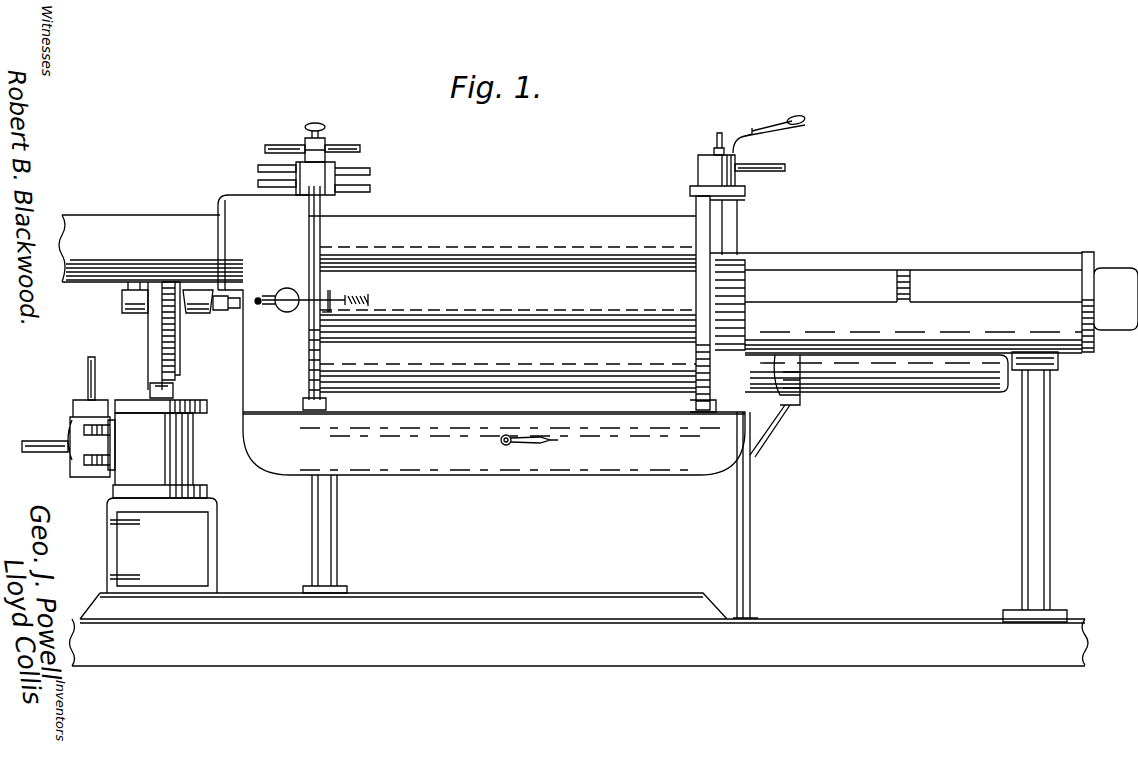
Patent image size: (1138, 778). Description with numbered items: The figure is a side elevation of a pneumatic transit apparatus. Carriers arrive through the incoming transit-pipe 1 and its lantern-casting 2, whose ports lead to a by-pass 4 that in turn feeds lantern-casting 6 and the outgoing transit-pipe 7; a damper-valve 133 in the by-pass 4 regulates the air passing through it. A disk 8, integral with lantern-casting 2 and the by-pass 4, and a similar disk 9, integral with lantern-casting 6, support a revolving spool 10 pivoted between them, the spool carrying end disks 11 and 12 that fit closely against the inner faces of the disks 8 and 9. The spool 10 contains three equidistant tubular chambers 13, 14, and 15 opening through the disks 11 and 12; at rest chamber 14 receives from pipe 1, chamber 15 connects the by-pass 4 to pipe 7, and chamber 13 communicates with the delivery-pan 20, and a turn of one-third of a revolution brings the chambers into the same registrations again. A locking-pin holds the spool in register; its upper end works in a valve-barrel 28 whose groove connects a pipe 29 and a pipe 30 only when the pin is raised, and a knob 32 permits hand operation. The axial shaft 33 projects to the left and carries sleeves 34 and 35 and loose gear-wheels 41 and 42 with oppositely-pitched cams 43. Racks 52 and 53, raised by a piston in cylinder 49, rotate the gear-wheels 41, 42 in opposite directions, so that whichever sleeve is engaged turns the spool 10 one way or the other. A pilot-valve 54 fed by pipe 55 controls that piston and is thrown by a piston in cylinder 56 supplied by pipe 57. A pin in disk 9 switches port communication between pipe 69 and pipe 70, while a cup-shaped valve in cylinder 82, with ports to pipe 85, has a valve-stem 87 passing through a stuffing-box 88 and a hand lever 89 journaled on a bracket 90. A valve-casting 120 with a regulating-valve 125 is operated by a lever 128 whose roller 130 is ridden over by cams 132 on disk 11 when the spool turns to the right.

The incoming transit-pipe 1 is at (143, 224).
The lantern-casting 2 is at (238, 198).
The by-pass 4 is at (494, 402).
The lantern-casting 6 is at (792, 405).
The outgoing transit-pipe 7 is at (903, 393).
The disk 8 is at (306, 241).
The disk 9 is at (738, 230).
The revolving spool 10 is at (502, 197).
The disk 11 is at (322, 222).
The disk 12 is at (696, 212).
The tubular chamber 13 is at (508, 311).
The tubular chamber 14 is at (508, 246).
The tubular chamber 15 is at (508, 370).
The delivery-pan 20 is at (952, 340).
The valve-barrel 28 is at (304, 137).
The pipe 29 is at (285, 144).
The pipe 30 is at (360, 143).
The knob 32 is at (318, 124).
The axial shaft 33 is at (212, 312).
The sleeve 34 is at (132, 315).
The sleeve 35 is at (195, 290).
The gear-wheel 41 is at (135, 290).
The gear-wheel 42 is at (163, 330).
The cams 43 is at (182, 320).
The cylinder 49 is at (193, 455).
The rack 52 is at (150, 386).
The rack 53 is at (178, 382).
The pilot-valve 54 is at (76, 462).
The pipe 55 is at (40, 441).
The cylinder 56 is at (72, 405).
The pipe 57 is at (88, 365).
The pipe 69 is at (372, 178).
The pipe 70 is at (375, 190).
The cylinder 82 is at (700, 170).
The pipe 85 is at (783, 164).
The valve-stem 87 is at (720, 145).
The stuffing-box 88 is at (714, 150).
The lever 89 is at (762, 123).
The bracket 90 is at (795, 137).
The valve-casting 120 is at (293, 282).
The regulating-valve 125 is at (258, 304).
The lever 128 is at (330, 291).
The roller 130 is at (350, 296).
The cams 132 is at (338, 316).
The damper-valve 133 is at (558, 440).